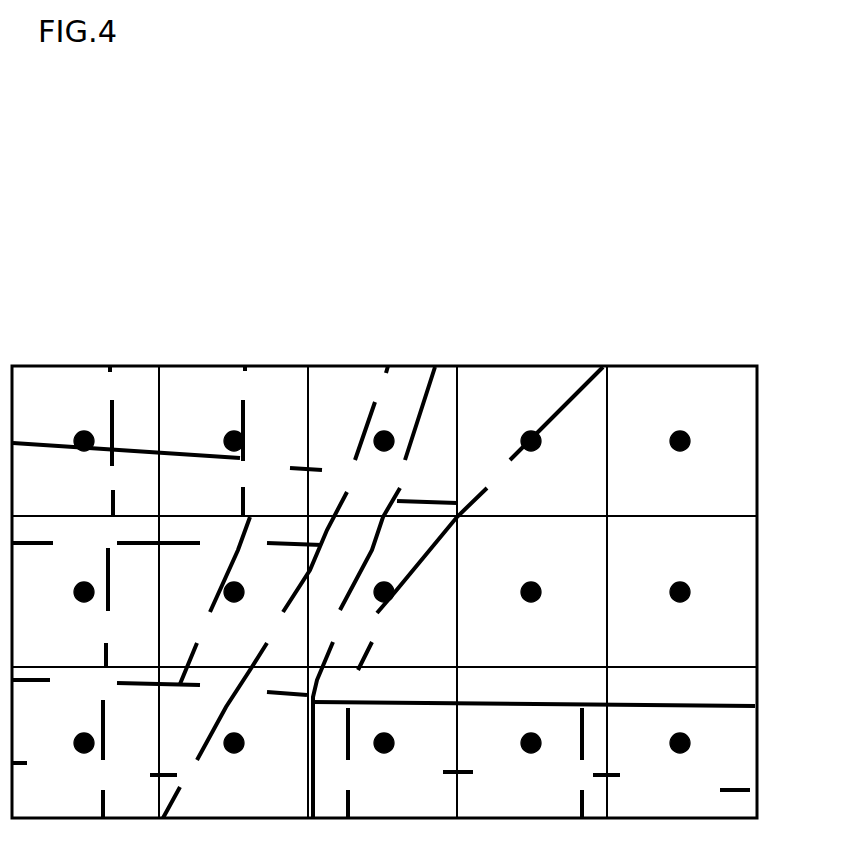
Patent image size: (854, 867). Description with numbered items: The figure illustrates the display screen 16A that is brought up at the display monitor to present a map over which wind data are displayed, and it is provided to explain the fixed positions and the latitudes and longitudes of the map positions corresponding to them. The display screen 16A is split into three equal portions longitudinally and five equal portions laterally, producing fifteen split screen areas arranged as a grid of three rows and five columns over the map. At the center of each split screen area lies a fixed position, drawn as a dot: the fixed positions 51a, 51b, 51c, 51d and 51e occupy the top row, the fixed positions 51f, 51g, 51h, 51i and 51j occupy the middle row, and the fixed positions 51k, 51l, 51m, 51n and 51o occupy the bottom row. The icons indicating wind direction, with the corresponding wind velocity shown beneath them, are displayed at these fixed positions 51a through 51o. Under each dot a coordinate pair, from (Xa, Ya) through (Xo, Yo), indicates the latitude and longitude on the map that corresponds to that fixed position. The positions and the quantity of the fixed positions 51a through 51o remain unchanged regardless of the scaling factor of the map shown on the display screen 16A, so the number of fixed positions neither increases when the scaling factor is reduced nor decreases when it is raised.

The display screen 16A is at (683, 345).
The fixed position 51a is at (84, 431).
The fixed position 51b is at (234, 431).
The fixed position 51c is at (384, 431).
The fixed position 51d is at (531, 431).
The fixed position 51e is at (680, 431).
The fixed position 51f is at (84, 582).
The fixed position 51g is at (234, 582).
The fixed position 51h is at (384, 582).
The fixed position 51i is at (531, 582).
The fixed position 51j is at (680, 582).
The fixed position 51k is at (84, 733).
The fixed position 51l is at (234, 733).
The fixed position 51m is at (384, 733).
The fixed position 51n is at (531, 733).
The fixed position 51o is at (680, 733).